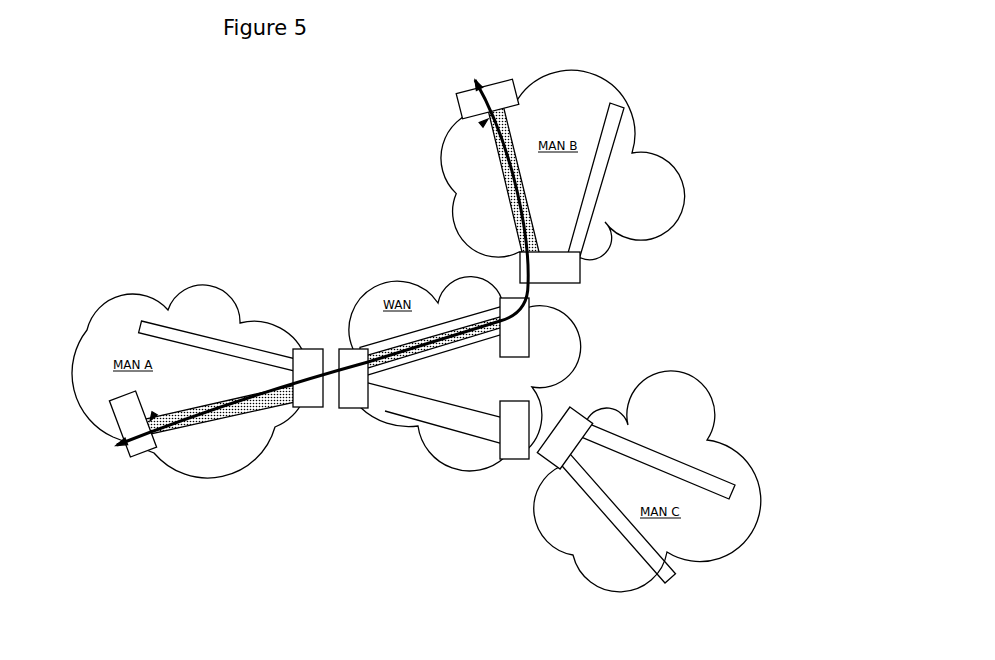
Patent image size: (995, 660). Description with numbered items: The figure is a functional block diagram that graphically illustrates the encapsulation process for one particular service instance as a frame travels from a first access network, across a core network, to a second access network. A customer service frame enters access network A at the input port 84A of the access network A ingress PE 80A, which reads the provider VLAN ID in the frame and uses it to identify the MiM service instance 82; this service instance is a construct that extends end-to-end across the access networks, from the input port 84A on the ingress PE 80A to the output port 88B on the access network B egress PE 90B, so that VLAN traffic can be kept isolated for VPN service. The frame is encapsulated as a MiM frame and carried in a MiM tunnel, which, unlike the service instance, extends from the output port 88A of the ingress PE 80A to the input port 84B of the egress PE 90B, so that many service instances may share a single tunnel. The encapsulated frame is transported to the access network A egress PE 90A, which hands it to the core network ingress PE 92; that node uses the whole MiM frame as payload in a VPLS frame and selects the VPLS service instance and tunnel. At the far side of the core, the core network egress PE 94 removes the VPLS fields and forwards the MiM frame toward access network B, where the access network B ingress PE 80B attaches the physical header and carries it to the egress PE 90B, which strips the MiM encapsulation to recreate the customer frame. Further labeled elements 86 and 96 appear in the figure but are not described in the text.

The access network A ingress PE 80A is at (150, 447).
The access network B ingress PE 80B is at (573, 277).
The MiM service instance 82 is at (212, 423).
The input port 84A is at (115, 445).
The input port 84B is at (484, 122).
The path segment within MAN A 86 is at (263, 414).
The output port 88A is at (152, 419).
The output port 88B is at (477, 82).
The access network A egress PE 90A is at (318, 407).
The access network B egress PE 90B is at (502, 79).
The core network ingress PE 92 is at (341, 349).
The core network egress PE 94 is at (528, 347).
The path segment within WAN 96 is at (444, 318).